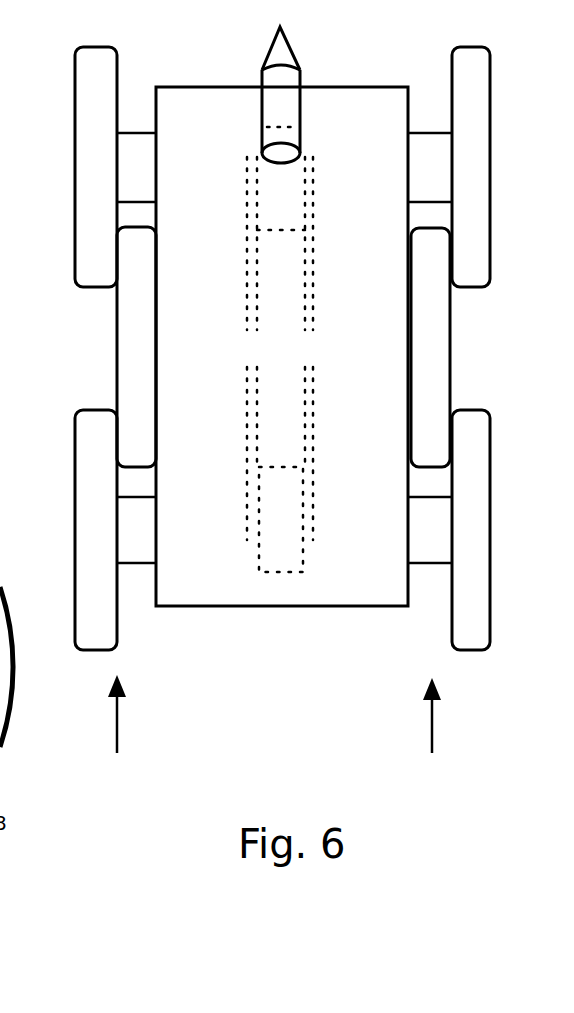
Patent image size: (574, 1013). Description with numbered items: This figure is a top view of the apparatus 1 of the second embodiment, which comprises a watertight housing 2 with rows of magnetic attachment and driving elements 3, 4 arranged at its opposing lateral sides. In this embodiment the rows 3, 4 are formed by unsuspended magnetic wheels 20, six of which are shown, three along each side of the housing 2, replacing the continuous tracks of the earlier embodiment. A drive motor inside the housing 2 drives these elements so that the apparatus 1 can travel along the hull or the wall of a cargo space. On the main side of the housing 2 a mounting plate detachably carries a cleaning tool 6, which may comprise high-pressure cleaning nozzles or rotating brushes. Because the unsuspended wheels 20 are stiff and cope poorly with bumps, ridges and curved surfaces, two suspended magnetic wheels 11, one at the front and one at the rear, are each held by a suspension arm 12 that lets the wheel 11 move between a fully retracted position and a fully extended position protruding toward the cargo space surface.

The apparatus 1 is at (248, 712).
The watertight housing 2 is at (333, 573).
The row of magnetic attachment and driving elements 3 is at (117, 729).
The row of magnetic attachment and driving elements 4 is at (432, 730).
The cleaning tool 6 is at (291, 88).
The suspended magnetic wheel 11 is at (260, 143).
The suspension arm 12 is at (247, 217).
The unsuspended magnetic wheel 20 is at (92, 98).